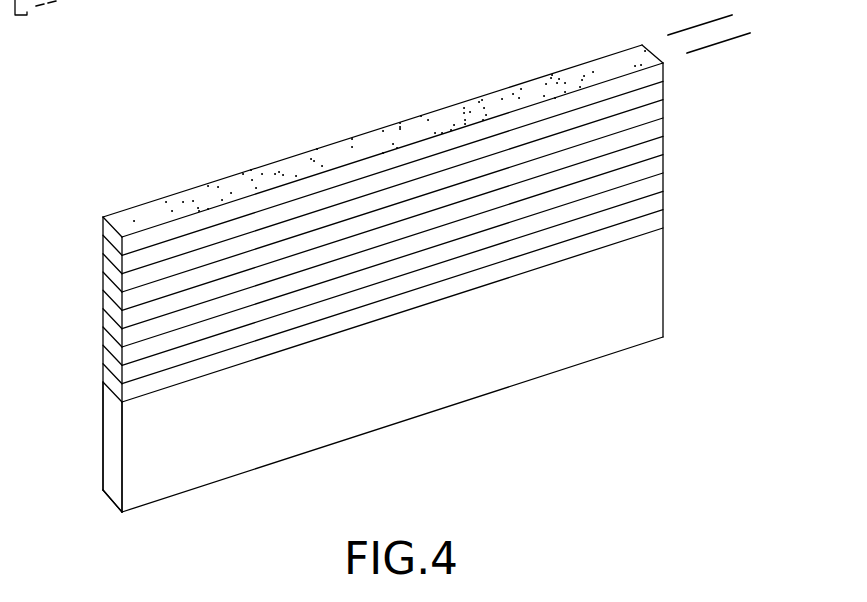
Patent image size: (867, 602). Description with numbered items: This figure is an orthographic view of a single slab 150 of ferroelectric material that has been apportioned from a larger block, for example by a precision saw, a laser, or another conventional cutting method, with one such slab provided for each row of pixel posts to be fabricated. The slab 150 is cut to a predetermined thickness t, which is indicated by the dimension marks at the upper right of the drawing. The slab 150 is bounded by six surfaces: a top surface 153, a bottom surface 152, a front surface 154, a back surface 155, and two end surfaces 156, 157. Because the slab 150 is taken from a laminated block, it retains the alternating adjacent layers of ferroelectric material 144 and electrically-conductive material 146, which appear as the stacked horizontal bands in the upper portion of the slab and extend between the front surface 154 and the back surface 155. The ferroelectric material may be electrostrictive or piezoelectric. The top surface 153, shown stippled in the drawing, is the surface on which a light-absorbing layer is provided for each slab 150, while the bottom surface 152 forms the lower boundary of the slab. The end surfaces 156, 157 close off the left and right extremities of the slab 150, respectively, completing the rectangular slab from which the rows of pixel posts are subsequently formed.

The slab 150 is at (378, 289).
The bottom surface 152 is at (487, 395).
The top surface 153 is at (128, 212).
The electrically-conductive material 146 is at (103, 238).
The ferroelectric material 144 is at (112, 272).
The back surface 155 is at (103, 397).
The front surface 154 is at (138, 425).
The end surface 156 is at (113, 485).
The end surface 157 is at (663, 293).
The predetermined thickness t is at (665, 0).